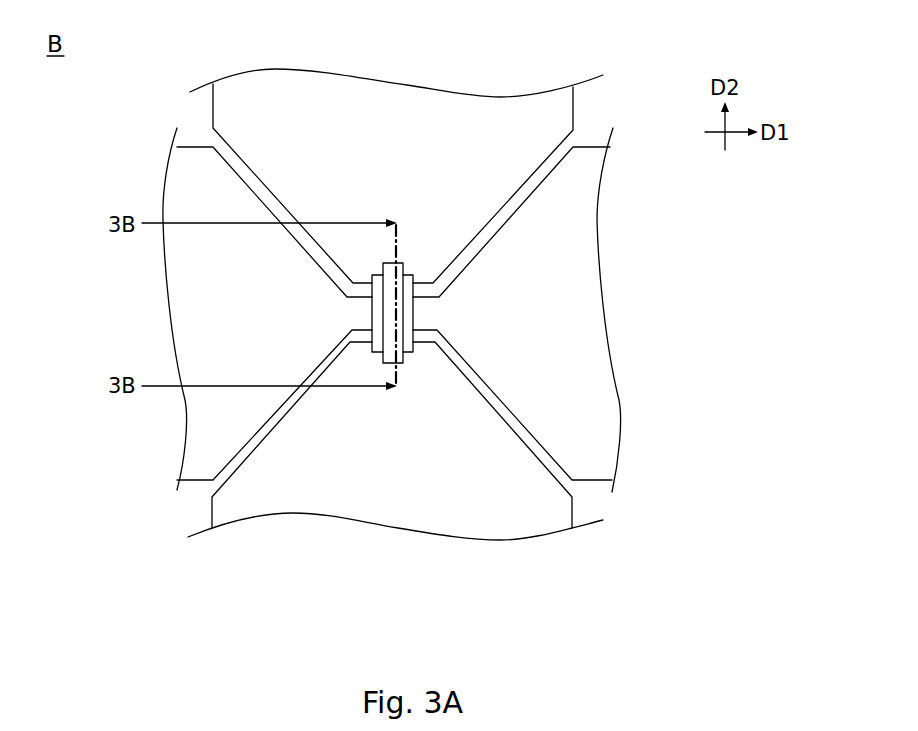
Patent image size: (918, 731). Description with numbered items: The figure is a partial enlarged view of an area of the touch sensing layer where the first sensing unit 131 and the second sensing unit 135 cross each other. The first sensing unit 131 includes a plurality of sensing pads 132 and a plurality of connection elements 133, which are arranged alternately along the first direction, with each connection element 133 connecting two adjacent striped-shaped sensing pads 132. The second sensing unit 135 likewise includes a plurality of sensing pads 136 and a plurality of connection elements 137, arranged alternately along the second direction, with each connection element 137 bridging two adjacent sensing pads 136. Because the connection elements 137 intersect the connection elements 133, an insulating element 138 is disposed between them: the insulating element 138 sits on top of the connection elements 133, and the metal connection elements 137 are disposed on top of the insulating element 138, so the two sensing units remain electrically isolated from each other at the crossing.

The first sensing unit 131 is at (708, 282).
The sensing pads 132 is at (183, 295).
The connection elements 133 is at (423, 318).
The second sensing unit 135 is at (478, 605).
The sensing pads 136 is at (395, 103).
The connection elements 137 is at (398, 353).
The insulating element 138 is at (410, 337).